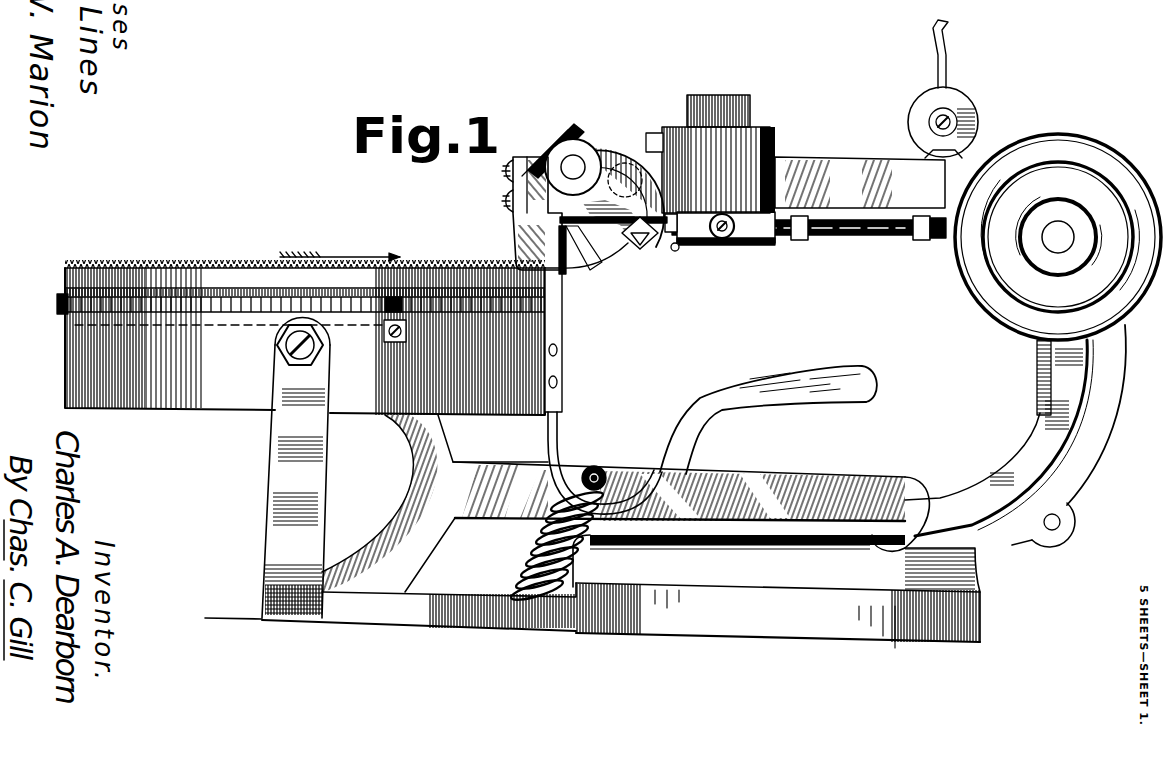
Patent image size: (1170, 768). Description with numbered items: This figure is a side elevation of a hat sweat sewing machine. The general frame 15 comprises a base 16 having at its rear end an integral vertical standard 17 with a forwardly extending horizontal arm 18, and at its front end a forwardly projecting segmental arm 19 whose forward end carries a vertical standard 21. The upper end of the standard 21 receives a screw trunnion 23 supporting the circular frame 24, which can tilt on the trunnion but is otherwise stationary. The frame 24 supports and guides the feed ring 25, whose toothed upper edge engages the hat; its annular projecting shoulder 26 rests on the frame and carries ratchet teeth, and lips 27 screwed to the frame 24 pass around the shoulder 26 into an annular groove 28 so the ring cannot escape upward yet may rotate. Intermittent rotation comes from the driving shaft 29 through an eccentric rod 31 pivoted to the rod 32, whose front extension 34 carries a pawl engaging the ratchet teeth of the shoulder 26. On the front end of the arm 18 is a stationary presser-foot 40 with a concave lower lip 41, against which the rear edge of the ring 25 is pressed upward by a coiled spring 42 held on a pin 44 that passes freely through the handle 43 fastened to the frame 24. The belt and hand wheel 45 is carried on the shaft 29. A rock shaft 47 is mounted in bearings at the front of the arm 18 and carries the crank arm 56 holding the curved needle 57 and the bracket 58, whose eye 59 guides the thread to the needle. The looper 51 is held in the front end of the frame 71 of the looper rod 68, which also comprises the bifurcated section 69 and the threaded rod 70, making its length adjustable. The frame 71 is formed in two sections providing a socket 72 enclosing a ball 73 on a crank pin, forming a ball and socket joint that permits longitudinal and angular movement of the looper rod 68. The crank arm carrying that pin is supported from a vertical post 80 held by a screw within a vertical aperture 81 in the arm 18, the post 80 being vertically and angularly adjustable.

The general frame 15 is at (1020, 512).
The base 16 is at (778, 615).
The vertical standard 17 is at (1015, 430).
The horizontal arm 18 is at (820, 166).
The segmental arm 19 is at (390, 607).
The vertical standard 21 is at (282, 452).
The screw trunnion 23 is at (283, 347).
The circular frame 24 is at (305, 341).
The feed ring 25 is at (236, 272).
The annular projecting shoulder 26 is at (58, 302).
The lip 27 is at (384, 337).
The annular groove 28 is at (62, 292).
The driving shaft 29 is at (1060, 248).
The eccentric rod 31 is at (1040, 368).
The rod 32 is at (803, 492).
The extension 34 is at (408, 440).
The presser-foot 40 is at (520, 222).
The concave lower end or lip 41 is at (565, 275).
The coiled spring 42 is at (548, 535).
The handle 43 is at (775, 372).
The pin 44 is at (600, 470).
The belt and hand wheel 45 is at (985, 298).
The rock shaft 47 is at (576, 162).
The looper 51 is at (558, 244).
The crank arm 56 is at (615, 150).
The needle 57 is at (620, 254).
The bracket 58 is at (647, 242).
The eye 59 is at (679, 250).
The looper rod 68 is at (922, 238).
The bifurcated section 69 is at (938, 242).
The threaded rod 70 is at (868, 226).
The frame 71 is at (778, 212).
The socket 72 is at (745, 246).
The ball 73 is at (778, 240).
The vertical post 80 is at (718, 104).
The vertical aperture 81 is at (756, 130).